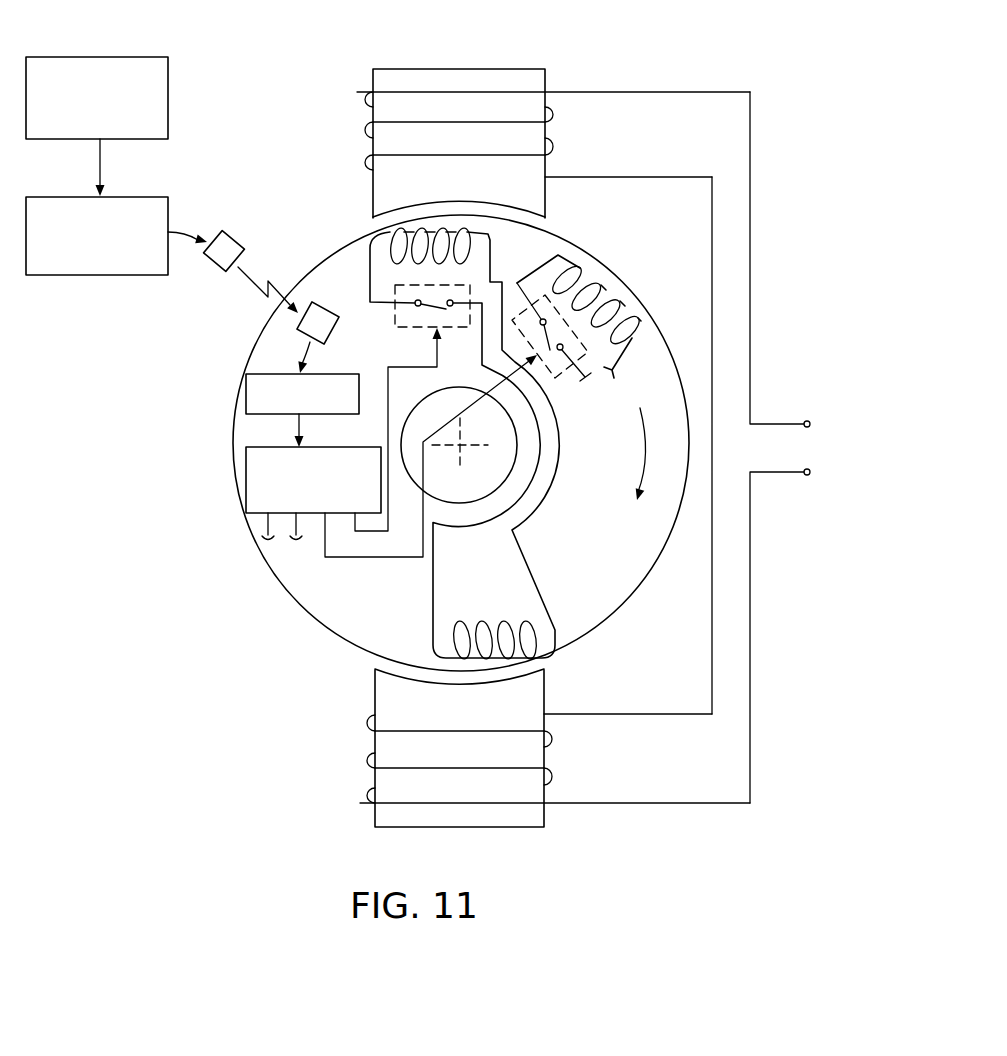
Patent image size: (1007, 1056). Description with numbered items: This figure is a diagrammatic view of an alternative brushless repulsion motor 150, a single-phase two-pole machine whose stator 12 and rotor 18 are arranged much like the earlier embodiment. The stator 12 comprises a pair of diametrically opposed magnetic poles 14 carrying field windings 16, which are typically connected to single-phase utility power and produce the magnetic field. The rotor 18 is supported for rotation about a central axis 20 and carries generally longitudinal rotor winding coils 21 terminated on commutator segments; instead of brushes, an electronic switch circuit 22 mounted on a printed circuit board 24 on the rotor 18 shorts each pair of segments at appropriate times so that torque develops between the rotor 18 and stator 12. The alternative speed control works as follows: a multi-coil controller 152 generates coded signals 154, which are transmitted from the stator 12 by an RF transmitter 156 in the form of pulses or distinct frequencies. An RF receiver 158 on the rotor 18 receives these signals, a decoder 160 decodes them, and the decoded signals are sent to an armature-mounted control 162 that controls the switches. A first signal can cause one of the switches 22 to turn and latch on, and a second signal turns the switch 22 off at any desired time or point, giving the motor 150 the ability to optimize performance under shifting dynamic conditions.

The motor stator 12 is at (471, 62).
The magnetic poles 14 is at (422, 80).
The field windings 16 is at (560, 146).
The rotor 18 is at (656, 319).
The central axis 20 is at (462, 448).
The rotor winding coils 21 is at (472, 243).
The electronic switch circuit 22 is at (422, 328).
The printed circuit board 24 is at (612, 598).
The alternative BLR motor 150 is at (657, 57).
The multi-coil controller 152 is at (170, 98).
The coded signals 154 is at (147, 196).
The RF transmitter 156 is at (227, 230).
The RF receiver 158 is at (297, 330).
The decoder 160 is at (246, 396).
The armature-mounted control 162 is at (246, 473).